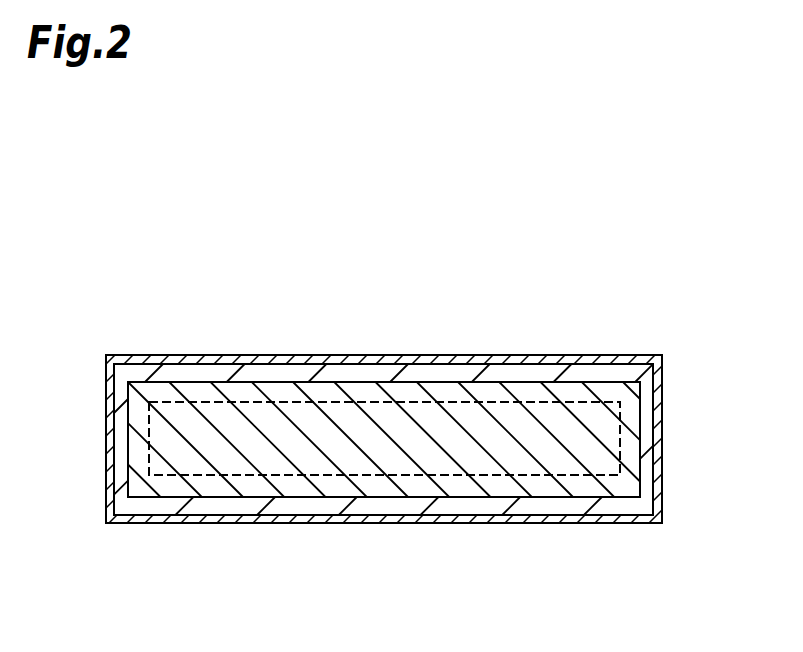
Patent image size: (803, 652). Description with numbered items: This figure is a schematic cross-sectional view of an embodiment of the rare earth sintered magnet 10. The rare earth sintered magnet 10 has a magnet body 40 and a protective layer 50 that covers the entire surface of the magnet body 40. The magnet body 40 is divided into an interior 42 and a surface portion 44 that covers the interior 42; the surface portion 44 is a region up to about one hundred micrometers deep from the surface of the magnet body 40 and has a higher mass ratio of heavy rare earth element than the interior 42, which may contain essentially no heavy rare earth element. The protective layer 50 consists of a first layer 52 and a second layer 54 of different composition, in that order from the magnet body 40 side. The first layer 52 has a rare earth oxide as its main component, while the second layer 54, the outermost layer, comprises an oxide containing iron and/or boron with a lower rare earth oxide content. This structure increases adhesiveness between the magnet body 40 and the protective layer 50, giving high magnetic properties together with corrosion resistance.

The rare earth sintered magnet 10 is at (641, 296).
The magnet body 40 is at (297, 582).
The interior 42 is at (283, 463).
The surface portion 44 is at (222, 485).
The protective layer 50 is at (730, 423).
The first layer 52 is at (647, 436).
The second layer 54 is at (659, 472).